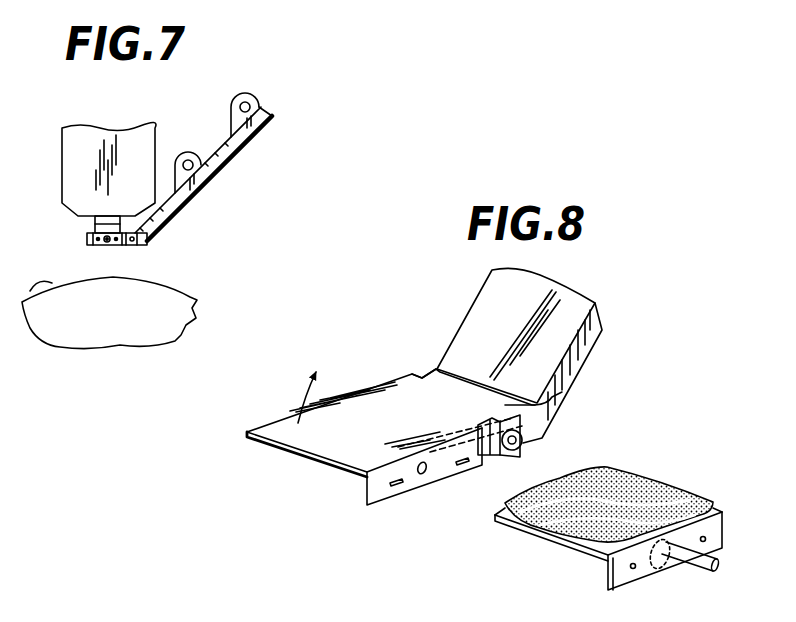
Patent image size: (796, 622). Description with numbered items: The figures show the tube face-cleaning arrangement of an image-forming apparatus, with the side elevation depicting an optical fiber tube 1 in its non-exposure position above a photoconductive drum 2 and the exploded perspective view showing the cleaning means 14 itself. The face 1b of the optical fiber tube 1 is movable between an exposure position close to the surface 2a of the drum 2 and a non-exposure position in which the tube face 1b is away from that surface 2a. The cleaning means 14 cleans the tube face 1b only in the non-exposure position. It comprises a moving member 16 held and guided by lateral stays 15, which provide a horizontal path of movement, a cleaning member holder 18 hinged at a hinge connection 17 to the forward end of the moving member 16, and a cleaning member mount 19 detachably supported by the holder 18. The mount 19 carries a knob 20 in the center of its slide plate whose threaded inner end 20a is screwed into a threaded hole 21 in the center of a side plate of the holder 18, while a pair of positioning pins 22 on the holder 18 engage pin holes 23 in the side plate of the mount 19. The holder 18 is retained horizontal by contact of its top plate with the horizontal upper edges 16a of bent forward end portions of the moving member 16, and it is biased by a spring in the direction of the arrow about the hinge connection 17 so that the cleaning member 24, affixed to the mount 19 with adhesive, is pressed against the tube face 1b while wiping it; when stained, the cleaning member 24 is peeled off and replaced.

In FIG. 7, the optical fiber tube 1 is at (70, 176).
In FIG. 7, the tube face 1b is at (95, 226).
In FIG. 7, the photoconductive drum 2 is at (187, 298).
In FIG. 7, the drum surface 2a is at (48, 284).
In FIG. 7, the cleaning means 14 is at (220, 184).
In FIG. 8, the cleaning means 14 is at (576, 402).
In FIG. 7, the lateral stays 15 is at (248, 103).
In FIG. 7, the moving member 16 is at (182, 199).
In FIG. 8, the moving member 16 is at (487, 318).
In FIG. 8, the horizontal upper edges 16a is at (528, 400).
In FIG. 7, the hinge connection 17 is at (147, 239).
In FIG. 8, the hinge connection 17 is at (523, 444).
In FIG. 7, the cleaning member holder 18 is at (132, 247).
In FIG. 8, the cleaning member holder 18 is at (377, 394).
In FIG. 7, the cleaning member mount 19 is at (98, 246).
In FIG. 8, the cleaning member mount 19 is at (607, 573).
In FIG. 7, the knob 20 is at (107, 246).
In FIG. 8, the knob 20 is at (716, 569).
In FIG. 8, the threaded inner end 20a is at (668, 570).
In FIG. 8, the threaded hole 21 is at (419, 463).
In FIG. 7, the positioning pins 22 is at (88, 240).
In FIG. 8, the positioning pins 22 is at (463, 466).
In FIG. 8, the pin holes 23 is at (707, 539).
In FIG. 7, the cleaning member 24 is at (113, 225).
In FIG. 8, the cleaning member 24 is at (652, 490).